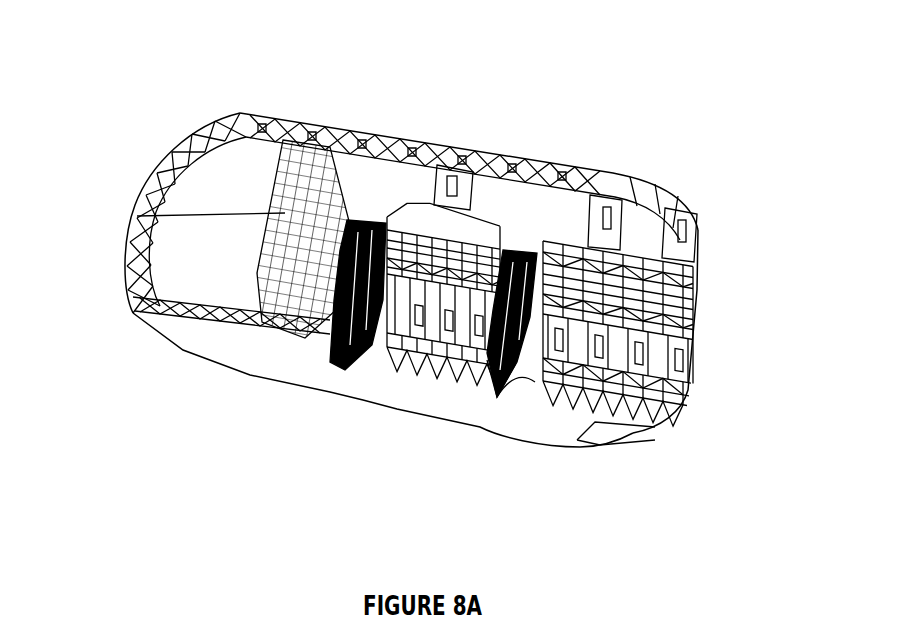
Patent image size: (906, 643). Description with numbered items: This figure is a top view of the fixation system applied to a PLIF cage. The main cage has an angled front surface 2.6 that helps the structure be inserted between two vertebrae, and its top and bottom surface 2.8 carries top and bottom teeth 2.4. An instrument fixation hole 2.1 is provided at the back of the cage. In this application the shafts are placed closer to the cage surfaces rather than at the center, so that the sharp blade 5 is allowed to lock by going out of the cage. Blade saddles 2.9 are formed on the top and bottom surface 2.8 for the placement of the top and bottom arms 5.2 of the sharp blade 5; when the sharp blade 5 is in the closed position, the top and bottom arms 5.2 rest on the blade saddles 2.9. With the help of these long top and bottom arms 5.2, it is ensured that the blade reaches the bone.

The angled front surface 2.6 is at (231, 193).
The top and bottom surface 2.8 is at (367, 133).
The sharp blade 5 is at (525, 250).
The top and bottom teeth 2.4 is at (645, 268).
The top and bottom arms 5.2 is at (487, 380).
The blade saddle 2.9 is at (515, 387).
The instrument fixation hole 2.1 is at (623, 437).